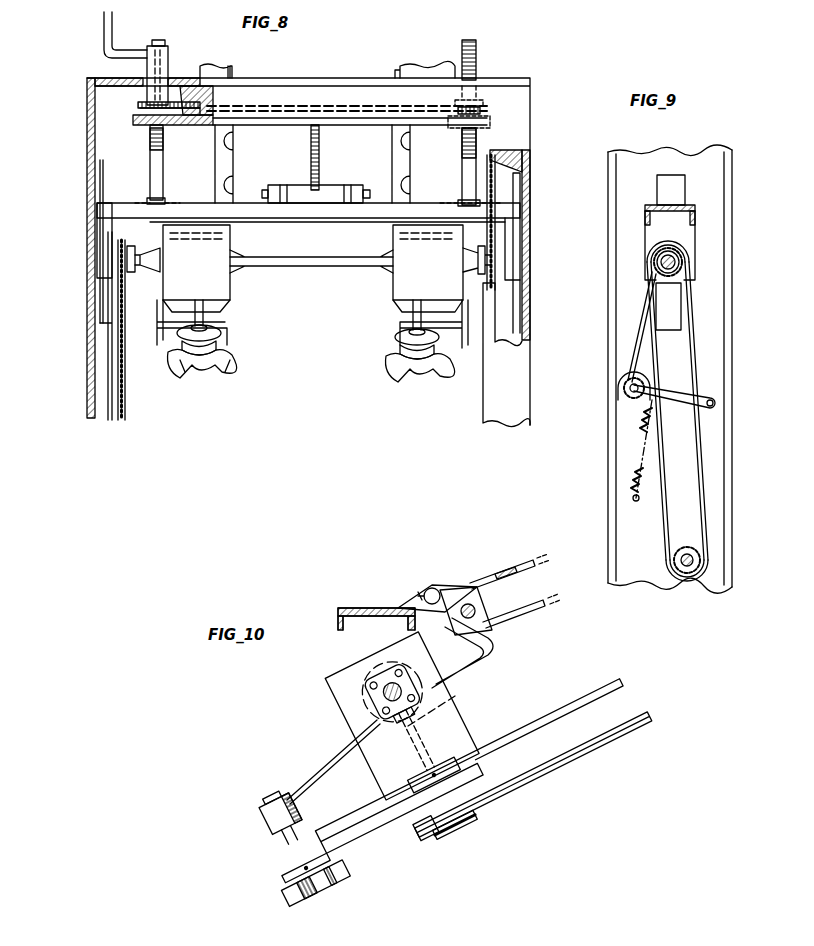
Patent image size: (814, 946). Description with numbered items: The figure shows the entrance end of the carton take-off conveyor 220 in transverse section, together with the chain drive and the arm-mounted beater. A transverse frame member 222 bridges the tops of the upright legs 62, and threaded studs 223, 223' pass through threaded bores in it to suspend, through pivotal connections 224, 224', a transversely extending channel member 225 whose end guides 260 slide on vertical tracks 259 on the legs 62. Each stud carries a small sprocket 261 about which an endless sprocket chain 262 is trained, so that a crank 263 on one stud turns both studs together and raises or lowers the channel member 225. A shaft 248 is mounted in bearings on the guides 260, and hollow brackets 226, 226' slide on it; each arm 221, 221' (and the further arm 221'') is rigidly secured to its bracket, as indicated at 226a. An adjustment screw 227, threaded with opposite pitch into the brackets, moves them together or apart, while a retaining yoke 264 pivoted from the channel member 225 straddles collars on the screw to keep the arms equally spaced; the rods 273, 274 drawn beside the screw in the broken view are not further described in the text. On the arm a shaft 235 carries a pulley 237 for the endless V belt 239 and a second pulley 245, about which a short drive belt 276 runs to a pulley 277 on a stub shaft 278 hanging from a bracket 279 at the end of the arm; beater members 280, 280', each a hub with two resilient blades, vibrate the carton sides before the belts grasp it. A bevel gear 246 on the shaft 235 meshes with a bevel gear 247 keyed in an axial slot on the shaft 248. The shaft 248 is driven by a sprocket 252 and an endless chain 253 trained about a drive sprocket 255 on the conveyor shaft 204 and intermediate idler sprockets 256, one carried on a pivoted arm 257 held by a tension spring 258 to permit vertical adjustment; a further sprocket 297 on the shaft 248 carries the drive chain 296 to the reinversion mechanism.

In FIG. 8, the upwardly projecting legs or standards 62 is at (88, 360).
In FIG. 9, the upwardly projecting legs or standards 62 is at (722, 322).
In FIG. 9, the shaft 204 is at (694, 562).
In FIG. 8, the carton take-off conveyor 220 is at (348, 358).
In FIG. 8, the arm 221 is at (195, 205).
In FIG. 10, the arm 221 is at (545, 683).
In FIG. 8, the arm 221' is at (416, 55).
In FIG. 8, the arm 221'' is at (441, 331).
In FIG. 8, the transverse frame member 222 is at (300, 87).
In FIG. 8, the threaded stud 223 is at (177, 55).
In FIG. 8, the threaded stud 223' is at (488, 81).
In FIG. 8, the pivotal connection 224 is at (168, 164).
In FIG. 8, the pivotal connection 224' is at (456, 167).
In FIG. 8, the channel member 225 is at (297, 212).
In FIG. 9, the channel member 225 is at (693, 206).
In FIG. 10, the channel member 225 is at (340, 610).
In FIG. 8, the hollow bracket 226 is at (221, 268).
In FIG. 10, the hollow bracket 226 is at (376, 719).
In FIG. 8, the hollow bracket 226' is at (392, 268).
In FIG. 10, the rigid securement of arm to bracket 226a is at (486, 724).
In FIG. 10, the adjustment screw 227 is at (476, 632).
In FIG. 10, the shaft 235 is at (477, 830).
In FIG. 8, the pulley 237 is at (214, 324).
In FIG. 10, the pulley 237 is at (444, 838).
In FIG. 10, the endless V belt 239 is at (542, 791).
In FIG. 8, the second pulley 245 is at (218, 343).
In FIG. 10, the second pulley 245 is at (444, 745).
In FIG. 10, the bevel gear 246 is at (456, 698).
In FIG. 10, the bevel gear 247 is at (466, 678).
In FIG. 8, the shaft 248 is at (310, 262).
In FIG. 9, the shaft 248 is at (660, 262).
In FIG. 10, the shaft 248 is at (367, 679).
In FIG. 8, the sprocket 252 is at (120, 245).
In FIG. 9, the sprocket 252 is at (682, 268).
In FIG. 8, the endless chain 253 is at (112, 410).
In FIG. 9, the endless chain 253 is at (700, 354).
In FIG. 9, the drive sprocket 255 is at (690, 578).
In FIG. 9, the intermediate idler sprocket 256 is at (626, 398).
In FIG. 9, the pivoted arm 257 is at (706, 397).
In FIG. 9, the tension spring 258 is at (636, 462).
In FIG. 8, the vertical track 259 is at (522, 190).
In FIG. 9, the vertical track 259 is at (667, 184).
In FIG. 8, the guide 260 is at (100, 213).
In FIG. 9, the guide 260 is at (688, 238).
In FIG. 8, the small sprocket 261 is at (140, 104).
In FIG. 8, the endless sprocket chain 262 is at (245, 102).
In FIG. 8, the crank 263 is at (110, 25).
In FIG. 8, the retaining yoke 264 is at (294, 185).
In FIG. 10, the retaining yoke 264 is at (446, 588).
In FIG. 8, the adjusting rod 273 is at (309, 140).
In FIG. 10, the adjusting rod 273 is at (500, 560).
In FIG. 10, the rod 274 is at (512, 618).
In FIG. 10, the short drive belt 276 is at (481, 783).
In FIG. 10, the pulley 277 is at (508, 583).
In FIG. 8, the stub shaft 278 is at (399, 345).
In FIG. 10, the stub shaft 278 is at (258, 801).
In FIG. 8, the bracket 279 is at (442, 300).
In FIG. 10, the bracket 279 is at (340, 762).
In FIG. 8, the beater member 280 is at (192, 373).
In FIG. 10, the beater member 280 is at (326, 891).
In FIG. 8, the beater member 280' is at (410, 383).
In FIG. 8, the drive chain 296 is at (524, 162).
In FIG. 8, the sprocket 297 is at (497, 285).